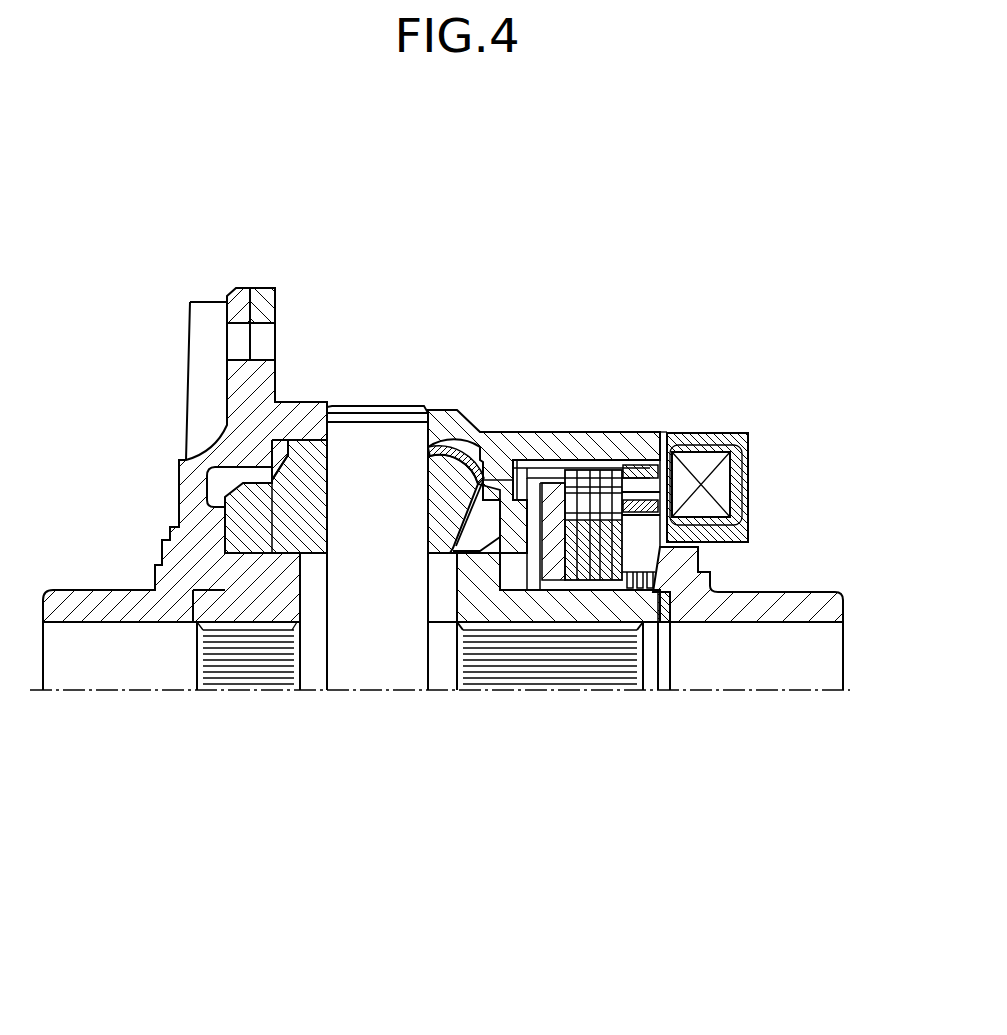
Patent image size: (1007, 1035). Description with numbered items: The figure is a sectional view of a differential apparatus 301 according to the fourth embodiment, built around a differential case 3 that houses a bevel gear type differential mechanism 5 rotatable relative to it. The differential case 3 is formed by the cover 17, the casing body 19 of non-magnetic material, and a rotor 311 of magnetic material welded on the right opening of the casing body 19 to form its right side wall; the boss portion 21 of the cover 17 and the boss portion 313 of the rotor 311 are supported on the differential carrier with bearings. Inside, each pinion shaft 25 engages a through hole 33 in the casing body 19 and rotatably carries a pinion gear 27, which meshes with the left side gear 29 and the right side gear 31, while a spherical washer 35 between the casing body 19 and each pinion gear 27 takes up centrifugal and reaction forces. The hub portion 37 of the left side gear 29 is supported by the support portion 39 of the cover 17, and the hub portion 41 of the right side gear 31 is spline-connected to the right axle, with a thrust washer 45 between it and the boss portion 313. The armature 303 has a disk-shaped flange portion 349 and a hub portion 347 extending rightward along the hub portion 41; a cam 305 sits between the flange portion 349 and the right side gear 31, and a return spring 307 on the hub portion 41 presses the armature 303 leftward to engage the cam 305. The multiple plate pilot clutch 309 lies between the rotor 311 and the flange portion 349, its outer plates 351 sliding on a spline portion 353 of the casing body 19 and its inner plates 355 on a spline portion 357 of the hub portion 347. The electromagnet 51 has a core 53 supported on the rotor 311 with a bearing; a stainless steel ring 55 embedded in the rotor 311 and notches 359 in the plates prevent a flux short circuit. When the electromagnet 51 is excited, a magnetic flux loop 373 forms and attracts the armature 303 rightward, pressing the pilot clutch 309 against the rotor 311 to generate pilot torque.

The differential case 3 is at (246, 283).
The bevel gear type differential mechanism 5 is at (386, 745).
The cover 17 is at (170, 486).
The casing body 19 is at (470, 412).
The boss portion 21 is at (90, 590).
The pinion shaft 25 is at (355, 678).
The pinion gear 27 is at (323, 493).
The left side gear 29 is at (307, 558).
The right side gear 31 is at (457, 556).
The through hole 33 is at (330, 433).
The spherical washer 35 is at (427, 450).
The hub portion 37 is at (283, 607).
The support portion 39 is at (213, 605).
The hub portion 41 is at (455, 637).
The thrust washer 45 is at (670, 640).
The electromagnet 51 is at (762, 445).
The core 53 is at (752, 495).
The ring 55 is at (688, 447).
The differential apparatus 301 is at (577, 228).
The armature 303 is at (550, 612).
The cam 305 is at (532, 470).
The return spring 307 is at (640, 625).
The multiple plate pilot clutch 309 is at (598, 425).
The rotor 311 is at (720, 574).
The boss portion 313 is at (803, 615).
The hub portion 347 is at (545, 605).
The flange portion 349 is at (620, 465).
The outer plates 351 is at (636, 478).
The spline portion 353 is at (552, 465).
The inner plates 355 is at (532, 600).
The spline portion 357 is at (583, 598).
The notches 359 is at (655, 472).
The magnetic flux loop 373 is at (752, 462).